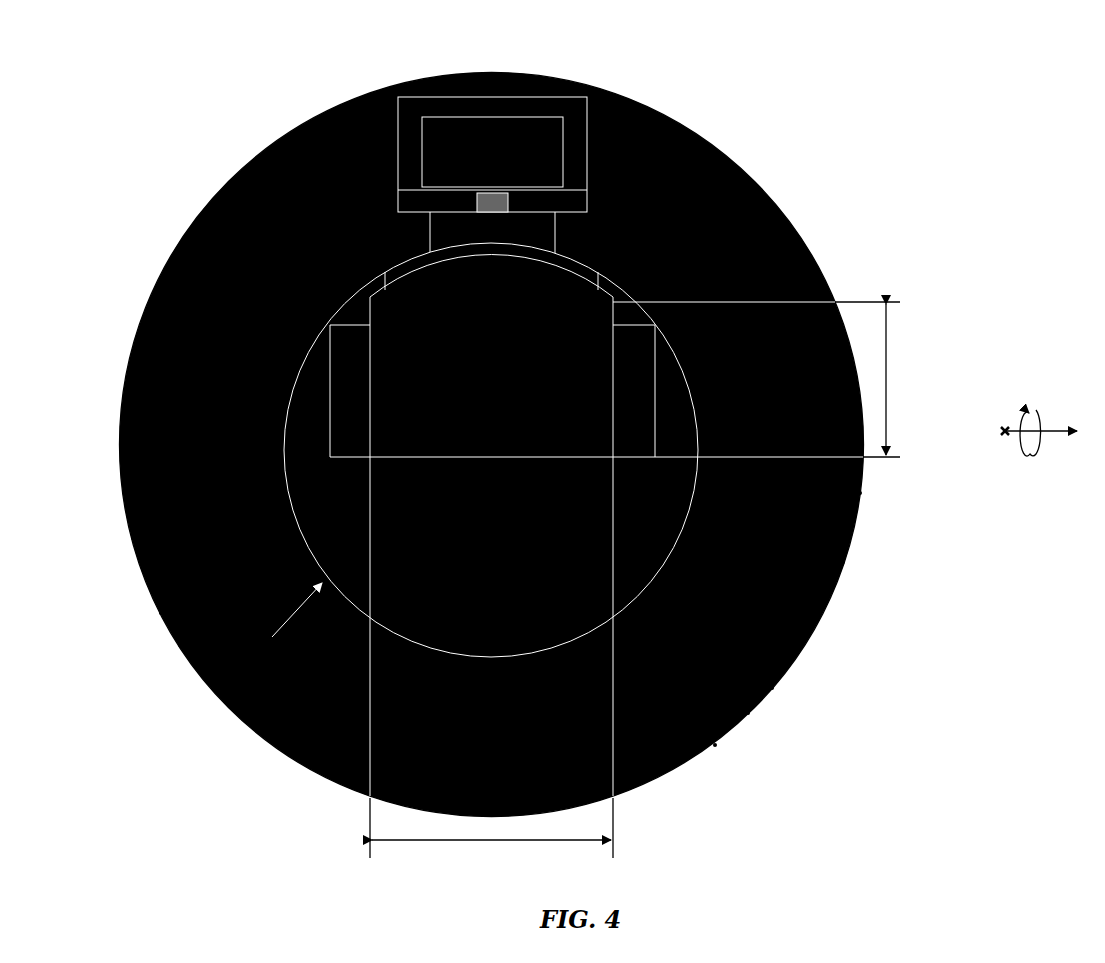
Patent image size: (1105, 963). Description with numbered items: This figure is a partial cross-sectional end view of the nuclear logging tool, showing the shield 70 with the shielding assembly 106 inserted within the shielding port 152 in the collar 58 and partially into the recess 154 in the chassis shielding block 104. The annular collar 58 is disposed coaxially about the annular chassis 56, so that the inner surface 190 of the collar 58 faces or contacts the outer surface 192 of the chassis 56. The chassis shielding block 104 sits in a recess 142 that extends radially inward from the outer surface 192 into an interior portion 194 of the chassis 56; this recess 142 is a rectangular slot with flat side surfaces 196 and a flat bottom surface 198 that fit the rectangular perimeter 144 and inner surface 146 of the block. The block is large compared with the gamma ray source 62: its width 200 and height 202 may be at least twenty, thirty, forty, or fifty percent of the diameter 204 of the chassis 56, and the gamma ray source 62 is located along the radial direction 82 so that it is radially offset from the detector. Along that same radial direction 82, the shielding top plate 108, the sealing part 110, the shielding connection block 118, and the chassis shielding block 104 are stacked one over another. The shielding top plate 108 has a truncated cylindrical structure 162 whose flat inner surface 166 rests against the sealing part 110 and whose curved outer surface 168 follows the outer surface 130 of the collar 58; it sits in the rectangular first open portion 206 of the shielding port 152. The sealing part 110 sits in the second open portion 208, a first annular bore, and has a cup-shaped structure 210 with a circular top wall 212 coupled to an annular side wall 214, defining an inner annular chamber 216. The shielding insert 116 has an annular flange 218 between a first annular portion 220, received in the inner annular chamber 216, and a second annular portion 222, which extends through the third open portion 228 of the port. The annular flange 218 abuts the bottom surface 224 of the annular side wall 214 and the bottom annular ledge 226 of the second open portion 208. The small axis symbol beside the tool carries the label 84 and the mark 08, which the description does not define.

The chassis 56 is at (306, 766).
The collar 58 is at (120, 403).
The gamma ray source 62 is at (206, 205).
The shield 70 is at (667, 93).
The radial direction 82 is at (1057, 435).
The rotation direction 84 is at (1029, 405).
The center point 08 is at (1000, 433).
The chassis shielding block 104 is at (846, 562).
The shielding assembly 106 is at (313, 92).
The shielding top plate 108 is at (490, 72).
The sealing part 110 is at (690, 130).
The shielding insert 116 is at (813, 256).
The shielding connection block 118 is at (834, 294).
The outer surface 130 is at (649, 784).
The recess 142 is at (131, 537).
The rectangular perimeter 144 is at (120, 440).
The inner surface 146 is at (159, 612).
The shielding port 152 is at (252, 159).
The recess 154 is at (154, 287).
The truncated cylindrical structure 162 is at (445, 75).
The inner surface 166 is at (305, 122).
The outer surface 168 is at (420, 80).
The inner surface 190 is at (773, 691).
The outer surface 192 is at (749, 716).
The interior portion 194 is at (716, 748).
The flat side surfaces 196 is at (122, 488).
The flat bottom surface 198 is at (177, 643).
The width 200 is at (493, 841).
The height 202 is at (889, 373).
The diameter 204 is at (269, 743).
The first open portion 206 is at (378, 91).
The second open portion 208 is at (718, 150).
The cup-shaped structure 210 is at (517, 73).
The circular top wall 212 is at (537, 75).
The annular side wall 214 is at (643, 104).
The inner annular chamber 216 is at (565, 80).
The annular flange 218 is at (764, 192).
The first annular portion 220 is at (228, 181).
The second annular portion 222 is at (186, 231).
The bottom surface 224 is at (741, 168).
The bottom annular ledge 226 is at (785, 216).
The third open portion 228 is at (826, 279).